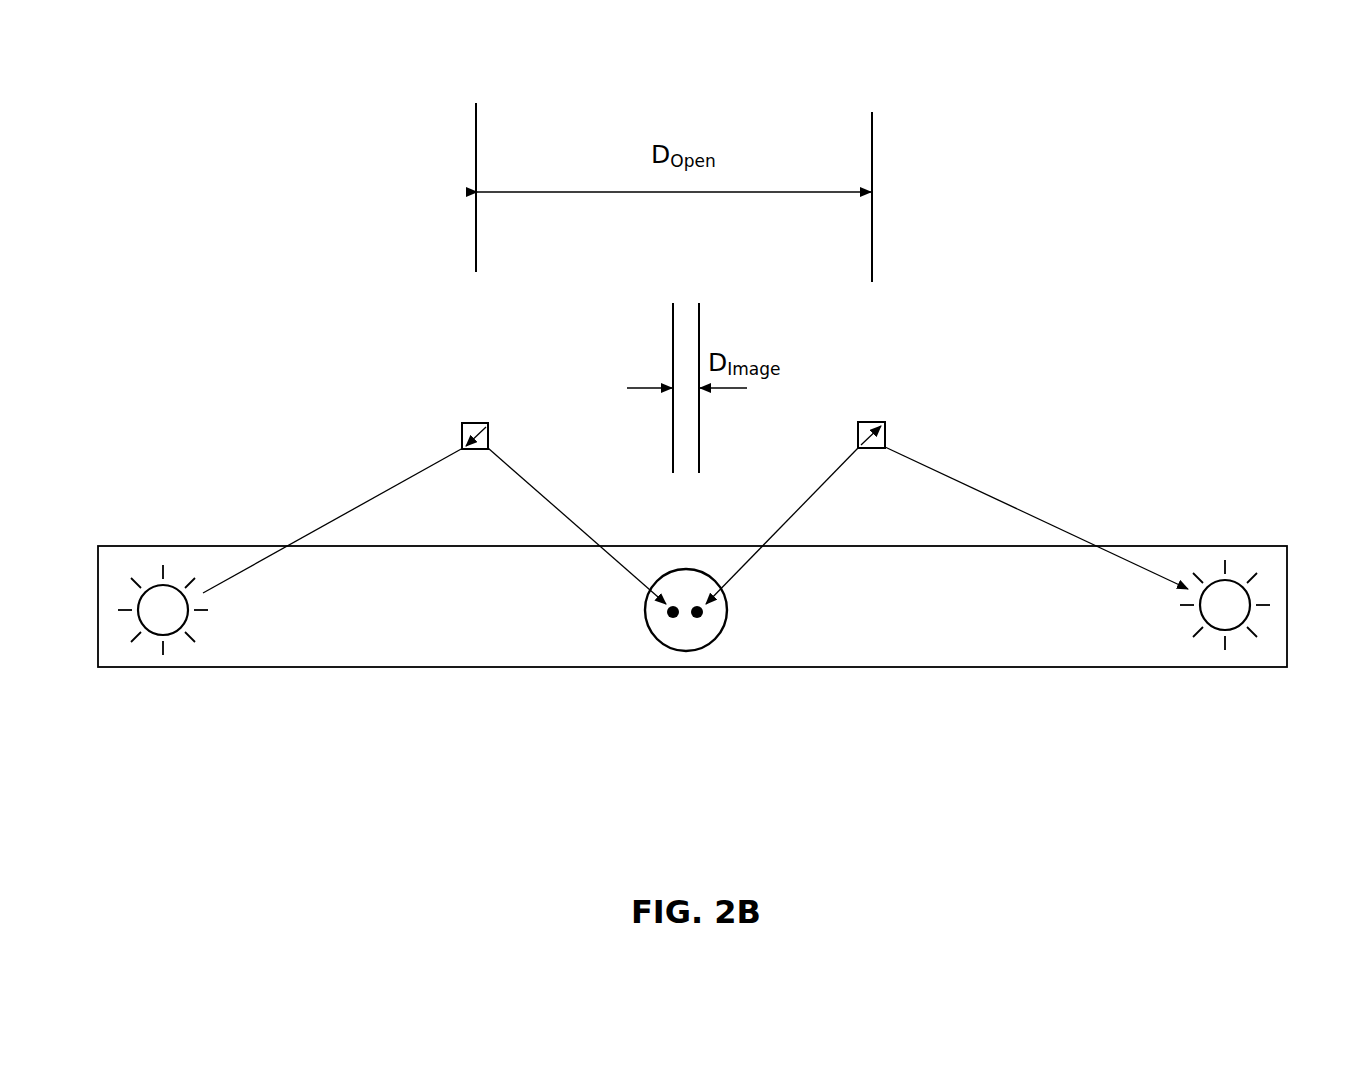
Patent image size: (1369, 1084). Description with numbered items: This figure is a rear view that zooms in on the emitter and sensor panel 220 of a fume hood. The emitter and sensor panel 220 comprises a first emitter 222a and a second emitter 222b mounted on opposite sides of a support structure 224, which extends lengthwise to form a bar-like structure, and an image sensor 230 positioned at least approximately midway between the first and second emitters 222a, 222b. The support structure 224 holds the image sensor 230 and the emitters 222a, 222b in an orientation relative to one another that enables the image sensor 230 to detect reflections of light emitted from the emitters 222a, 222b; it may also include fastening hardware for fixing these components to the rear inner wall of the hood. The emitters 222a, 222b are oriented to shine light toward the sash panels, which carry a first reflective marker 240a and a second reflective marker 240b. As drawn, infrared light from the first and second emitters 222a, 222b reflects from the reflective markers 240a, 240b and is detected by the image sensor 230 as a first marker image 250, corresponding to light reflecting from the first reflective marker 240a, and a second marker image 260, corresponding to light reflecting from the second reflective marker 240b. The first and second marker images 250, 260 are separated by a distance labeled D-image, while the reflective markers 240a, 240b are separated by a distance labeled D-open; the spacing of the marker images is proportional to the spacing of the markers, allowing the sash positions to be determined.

The emitter and sensor panel 220 is at (1139, 296).
The first emitter 222a is at (172, 585).
The second emitter 222b is at (1236, 578).
The support structure 224 is at (967, 613).
The image sensor 230 is at (699, 658).
The first reflective marker 240a is at (470, 423).
The second reflective marker 240b is at (872, 422).
The first marker image 250 is at (672, 629).
The second marker image 260 is at (708, 630).